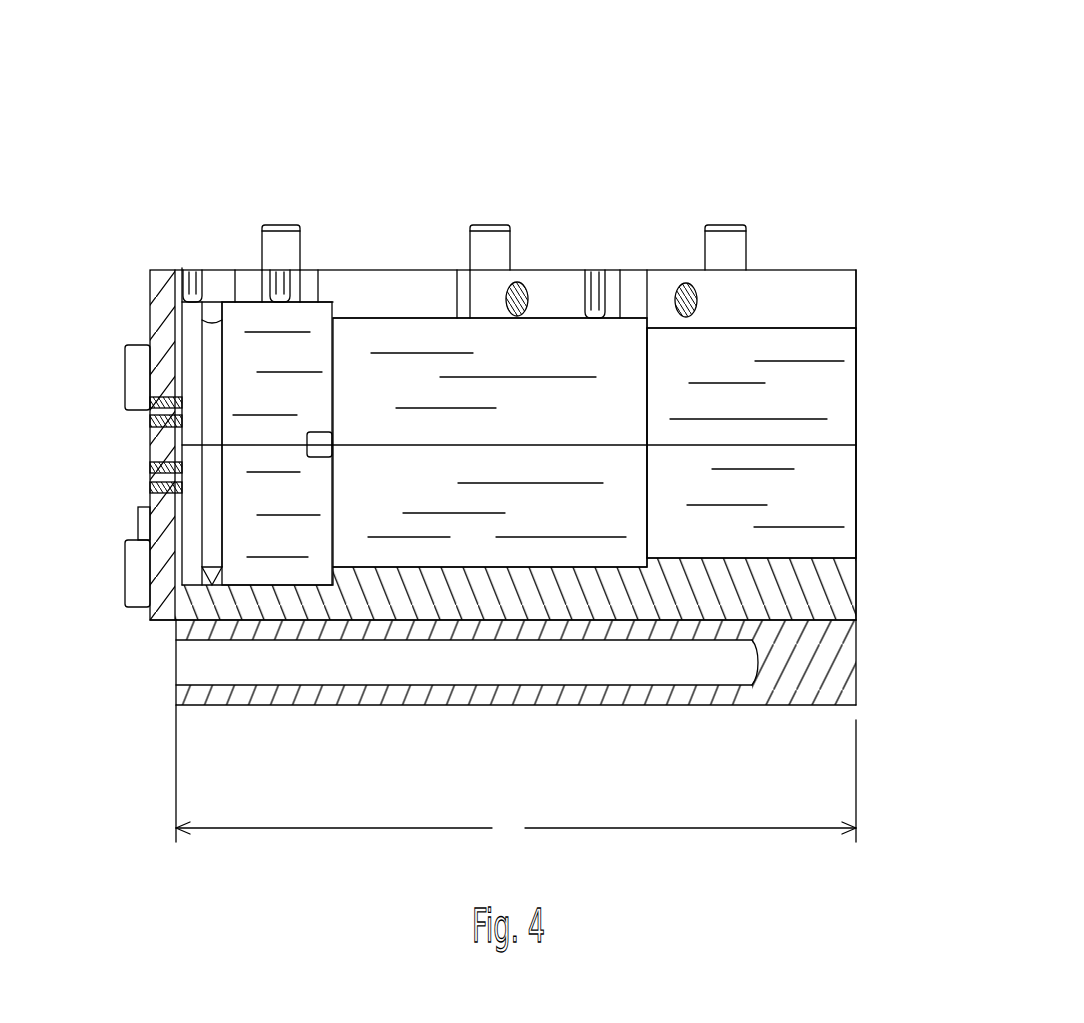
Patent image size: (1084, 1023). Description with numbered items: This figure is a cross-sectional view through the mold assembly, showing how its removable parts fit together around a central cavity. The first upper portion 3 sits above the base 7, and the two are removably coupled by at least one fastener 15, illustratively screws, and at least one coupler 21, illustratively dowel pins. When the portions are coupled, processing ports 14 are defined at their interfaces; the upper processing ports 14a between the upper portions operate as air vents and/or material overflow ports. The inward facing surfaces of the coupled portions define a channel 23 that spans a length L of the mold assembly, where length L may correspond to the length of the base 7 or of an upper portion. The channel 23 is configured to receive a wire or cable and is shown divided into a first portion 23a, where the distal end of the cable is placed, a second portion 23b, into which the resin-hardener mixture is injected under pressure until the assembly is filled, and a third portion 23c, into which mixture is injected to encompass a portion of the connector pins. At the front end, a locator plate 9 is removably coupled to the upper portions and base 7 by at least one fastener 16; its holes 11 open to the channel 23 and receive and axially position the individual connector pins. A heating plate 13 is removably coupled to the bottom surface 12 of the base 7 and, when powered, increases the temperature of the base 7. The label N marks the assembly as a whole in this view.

The first upper portion 3 is at (857, 384).
The base 7 is at (858, 575).
The locator plate 9 is at (155, 270).
The holes 11 is at (150, 426).
The bottom surface 12 is at (785, 622).
The heating plate 13 is at (307, 706).
The processing ports 14 is at (334, 213).
The upper processing ports 14a is at (192, 270).
The fastener 15 is at (490, 224).
The fastener 16 is at (125, 380).
The coupler 21 is at (332, 448).
The channel 23 is at (870, 500).
The first portion of channel 23a is at (805, 340).
The second portion of channel 23b is at (544, 354).
The third portion of channel 23c is at (237, 546).
The normal direction N is at (688, 66).
The length L is at (516, 778).